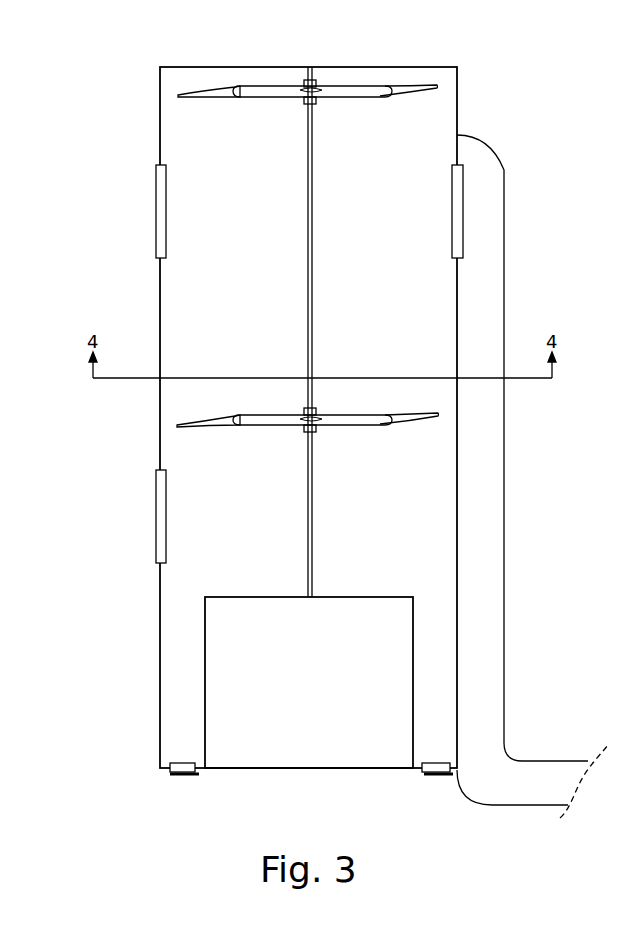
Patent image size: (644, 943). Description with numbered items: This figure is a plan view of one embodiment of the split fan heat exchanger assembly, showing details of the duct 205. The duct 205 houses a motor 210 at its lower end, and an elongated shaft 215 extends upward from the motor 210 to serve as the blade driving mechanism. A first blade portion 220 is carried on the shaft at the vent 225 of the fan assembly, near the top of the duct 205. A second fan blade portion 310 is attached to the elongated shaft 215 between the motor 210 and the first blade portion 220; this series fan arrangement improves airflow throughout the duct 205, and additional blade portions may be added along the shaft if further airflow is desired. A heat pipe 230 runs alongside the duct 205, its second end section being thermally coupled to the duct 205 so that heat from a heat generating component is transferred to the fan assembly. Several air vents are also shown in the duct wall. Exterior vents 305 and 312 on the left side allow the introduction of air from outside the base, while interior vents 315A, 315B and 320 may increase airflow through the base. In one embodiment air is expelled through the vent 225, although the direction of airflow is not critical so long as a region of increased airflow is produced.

The duct 205 is at (160, 628).
The motor 210 is at (398, 757).
The elongated shaft 215 is at (312, 525).
The blade portion 220 is at (436, 87).
The vent 225 is at (203, 67).
The heat pipe 230 is at (504, 655).
The exterior vent 305 is at (156, 516).
The second fan blade portion 310 is at (195, 427).
The exterior vent 312 is at (156, 242).
The interior vent 315A is at (180, 776).
The interior vent 315B is at (434, 776).
The interior vent 320 is at (452, 243).